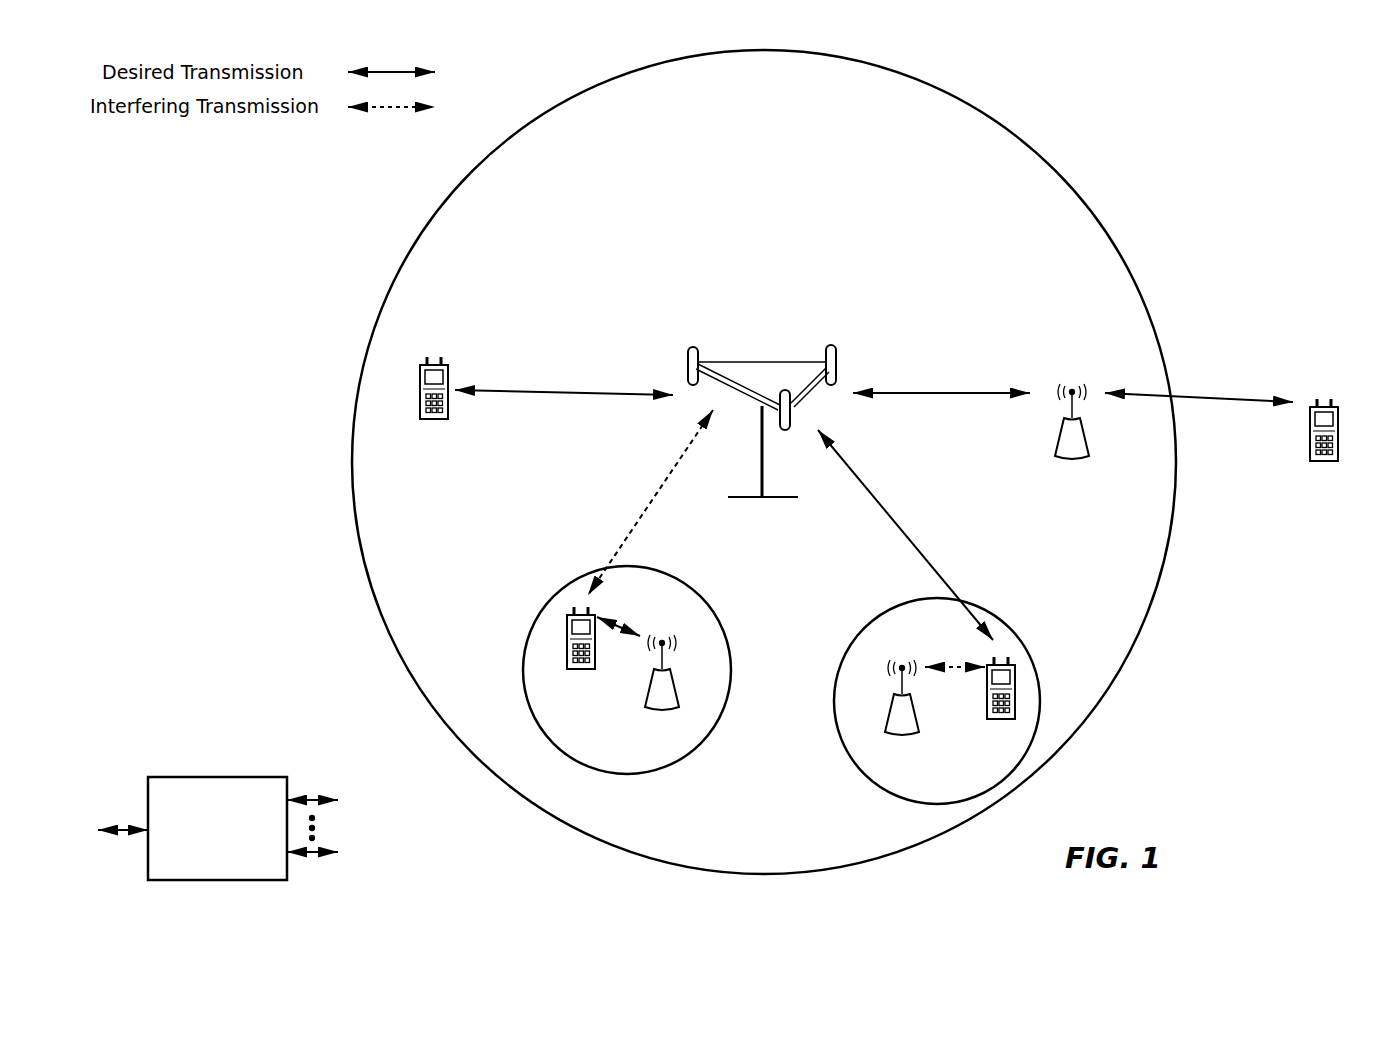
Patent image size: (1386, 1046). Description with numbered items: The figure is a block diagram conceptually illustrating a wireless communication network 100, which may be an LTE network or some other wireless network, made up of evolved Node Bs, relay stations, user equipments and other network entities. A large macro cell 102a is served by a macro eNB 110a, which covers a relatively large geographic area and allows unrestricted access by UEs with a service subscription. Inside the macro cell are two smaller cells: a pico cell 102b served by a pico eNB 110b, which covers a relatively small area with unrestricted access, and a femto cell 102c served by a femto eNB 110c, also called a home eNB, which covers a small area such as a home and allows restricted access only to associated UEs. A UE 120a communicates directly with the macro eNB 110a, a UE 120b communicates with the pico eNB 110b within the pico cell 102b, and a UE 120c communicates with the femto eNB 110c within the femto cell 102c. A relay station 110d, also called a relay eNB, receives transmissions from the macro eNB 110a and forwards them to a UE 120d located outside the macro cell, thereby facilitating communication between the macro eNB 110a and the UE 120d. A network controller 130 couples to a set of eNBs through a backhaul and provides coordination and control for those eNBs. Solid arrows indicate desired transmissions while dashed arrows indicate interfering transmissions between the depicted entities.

The wireless communication network 100 is at (1243, 113).
The macro cell 102a is at (1046, 136).
The pico cell 102b is at (705, 598).
The femto cell 102c is at (858, 633).
The macro eNB 110a is at (769, 348).
The pico eNB 110b is at (678, 695).
The femto eNB 110c is at (888, 720).
The relay station 110d is at (1074, 388).
The UE 120a is at (420, 372).
The UE 120b is at (567, 668).
The UE 120c is at (987, 712).
The UE 120d is at (1338, 414).
The network controller 130 is at (213, 777).